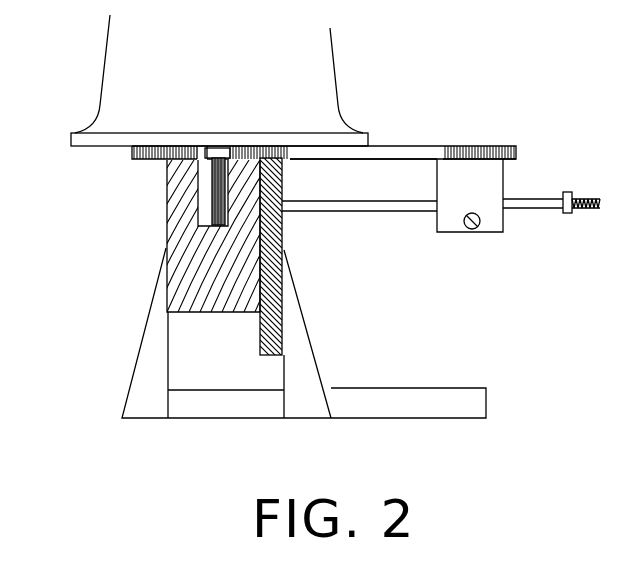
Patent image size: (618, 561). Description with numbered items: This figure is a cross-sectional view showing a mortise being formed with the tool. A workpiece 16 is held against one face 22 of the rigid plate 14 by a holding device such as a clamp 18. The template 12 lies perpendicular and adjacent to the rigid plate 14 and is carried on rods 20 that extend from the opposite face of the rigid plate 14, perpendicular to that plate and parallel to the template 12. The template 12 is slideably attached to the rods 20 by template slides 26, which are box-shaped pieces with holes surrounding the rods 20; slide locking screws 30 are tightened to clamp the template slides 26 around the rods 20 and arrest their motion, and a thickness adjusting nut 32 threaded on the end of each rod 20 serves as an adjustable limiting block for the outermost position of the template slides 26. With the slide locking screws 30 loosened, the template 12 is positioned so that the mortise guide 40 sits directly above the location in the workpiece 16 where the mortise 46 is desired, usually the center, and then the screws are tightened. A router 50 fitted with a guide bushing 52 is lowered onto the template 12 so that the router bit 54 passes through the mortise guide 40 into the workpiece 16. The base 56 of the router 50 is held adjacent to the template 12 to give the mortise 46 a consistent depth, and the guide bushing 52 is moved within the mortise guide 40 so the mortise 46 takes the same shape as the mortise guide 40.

The router 50 is at (156, 40).
The base of the router 56 is at (103, 147).
The template 12 is at (407, 152).
The mortise guide 40 is at (198, 147).
The guide bushing 52 is at (220, 150).
The router bit 54 is at (200, 196).
The workpiece 16 is at (180, 220).
The mortise 46 is at (200, 228).
The rigid plate 14 is at (272, 230).
The rods 20 is at (347, 203).
The template slides 26 is at (437, 226).
The slide locking screws 30 is at (475, 229).
The thickness adjusting nut 32 is at (567, 213).
The face of the rigid plate 22 is at (260, 330).
The clamp 18 is at (391, 397).